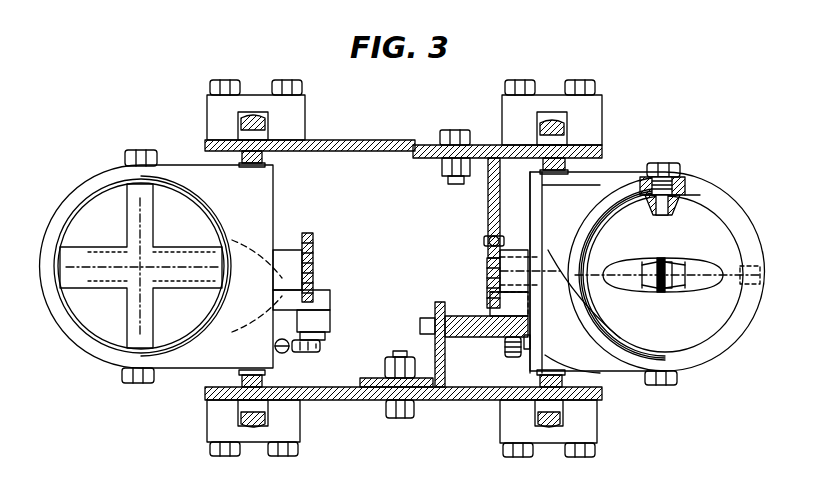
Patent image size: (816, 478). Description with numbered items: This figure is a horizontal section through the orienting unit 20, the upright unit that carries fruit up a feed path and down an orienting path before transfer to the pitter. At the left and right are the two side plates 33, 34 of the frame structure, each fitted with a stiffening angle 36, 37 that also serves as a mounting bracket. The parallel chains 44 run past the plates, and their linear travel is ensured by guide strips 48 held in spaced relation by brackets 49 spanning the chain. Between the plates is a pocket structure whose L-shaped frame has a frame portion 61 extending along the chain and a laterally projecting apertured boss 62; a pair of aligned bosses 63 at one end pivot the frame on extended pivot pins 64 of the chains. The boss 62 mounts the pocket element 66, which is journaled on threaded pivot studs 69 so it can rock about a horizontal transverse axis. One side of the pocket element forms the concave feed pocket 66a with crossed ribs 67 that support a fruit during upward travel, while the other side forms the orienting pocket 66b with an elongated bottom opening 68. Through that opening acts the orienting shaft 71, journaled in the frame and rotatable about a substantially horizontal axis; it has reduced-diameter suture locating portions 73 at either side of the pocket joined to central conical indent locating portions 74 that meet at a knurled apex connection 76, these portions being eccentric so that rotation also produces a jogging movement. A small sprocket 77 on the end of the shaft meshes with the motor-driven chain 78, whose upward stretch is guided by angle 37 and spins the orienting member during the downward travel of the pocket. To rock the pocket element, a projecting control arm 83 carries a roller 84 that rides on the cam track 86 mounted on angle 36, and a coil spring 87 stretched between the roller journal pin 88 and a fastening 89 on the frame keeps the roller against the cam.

The orienting unit 20 is at (372, 126).
The side plate 33 is at (442, 401).
The side plate 34 is at (412, 142).
The stiffening angle 36 is at (372, 378).
The stiffening angle 37 is at (488, 206).
The chain 44 is at (562, 142).
The guide strip 48 is at (207, 143).
The bracket 49 is at (207, 105).
The frame portion 61 is at (536, 208).
The boss 62 is at (42, 286).
The boss 63 is at (567, 169).
The pivot pin 64 is at (550, 121).
The pocket element 66 is at (72, 304).
The feed pocket 66a is at (150, 274).
The orienting pocket 66b is at (676, 322).
The crossed ribs 67 is at (108, 235).
The bottom opening 68 is at (688, 258).
The pivot stud 69 is at (140, 386).
The shaft 71 is at (704, 286).
The suture locating portion 73 is at (628, 280).
The indent locating portion 74 is at (667, 258).
The knurled apex connection 76 is at (660, 262).
The sprocket 77 is at (314, 237).
The chain 78 is at (485, 243).
The control arm 83 is at (325, 304).
The roller 84 is at (328, 314).
The cam track 86 is at (472, 306).
The coil spring 87 is at (284, 352).
The journal pin 88 is at (508, 356).
The fastening 89 is at (526, 352).